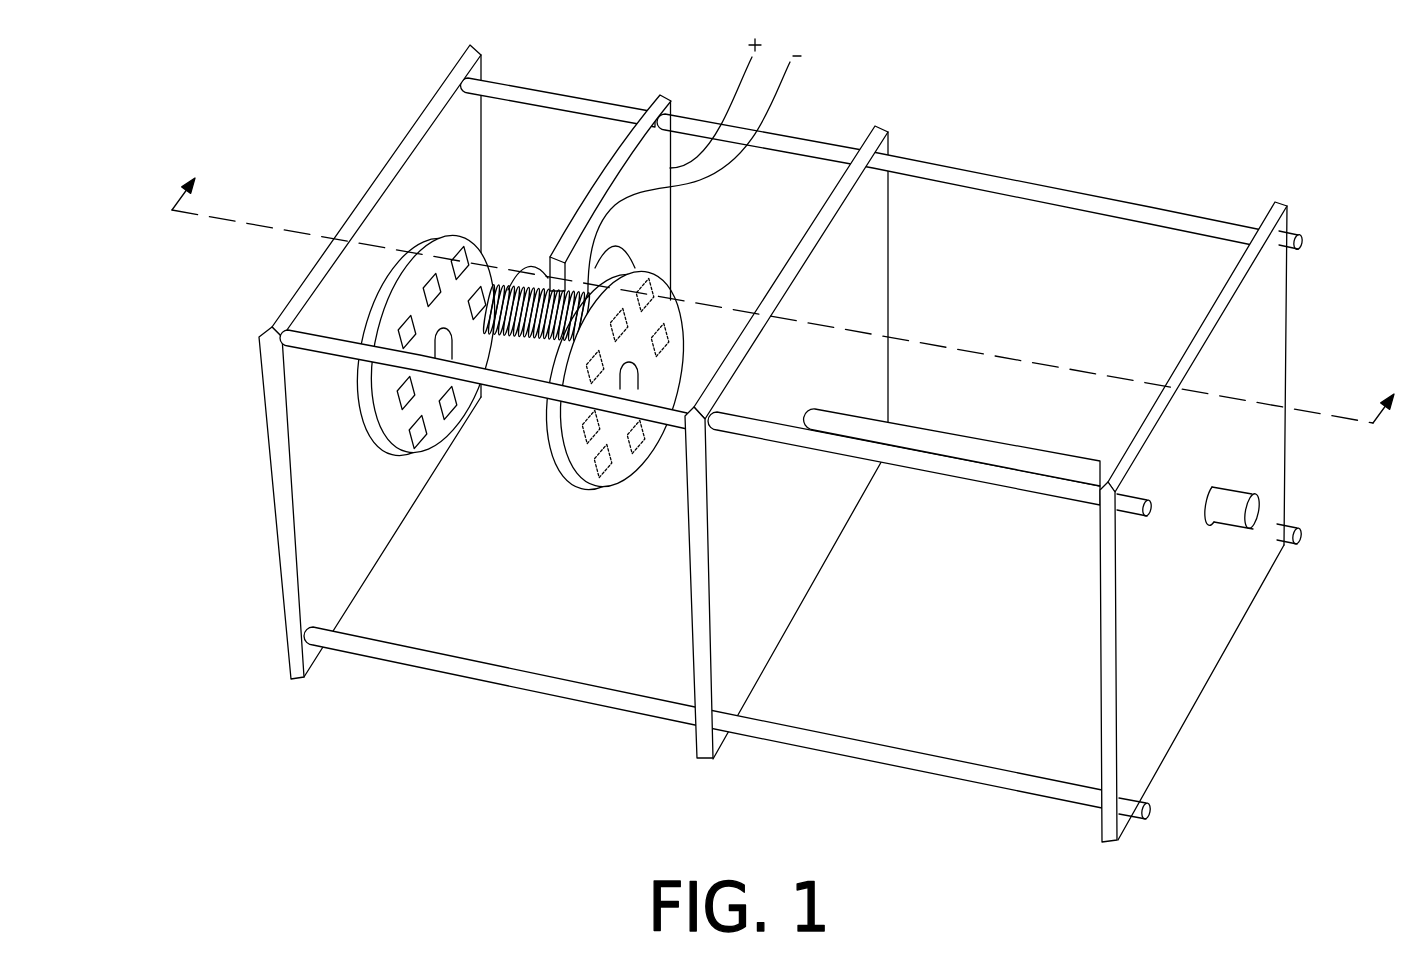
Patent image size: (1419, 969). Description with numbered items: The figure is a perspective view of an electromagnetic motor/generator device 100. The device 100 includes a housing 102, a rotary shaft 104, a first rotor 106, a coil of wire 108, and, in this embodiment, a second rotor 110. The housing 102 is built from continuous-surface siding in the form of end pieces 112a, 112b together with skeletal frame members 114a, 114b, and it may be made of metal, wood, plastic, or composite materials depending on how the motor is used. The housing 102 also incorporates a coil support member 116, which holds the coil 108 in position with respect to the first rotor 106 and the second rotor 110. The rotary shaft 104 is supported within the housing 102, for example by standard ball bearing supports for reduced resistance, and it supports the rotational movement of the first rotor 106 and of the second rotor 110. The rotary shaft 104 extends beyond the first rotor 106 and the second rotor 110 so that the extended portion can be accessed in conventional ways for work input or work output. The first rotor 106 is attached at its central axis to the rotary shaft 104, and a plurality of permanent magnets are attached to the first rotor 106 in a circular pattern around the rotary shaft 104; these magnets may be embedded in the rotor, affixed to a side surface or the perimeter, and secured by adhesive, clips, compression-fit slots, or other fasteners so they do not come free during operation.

The electromagnetic motor/generator device 100 is at (749, 428).
The housing 102 is at (696, 427).
The rotary shaft 104 is at (1248, 528).
The first rotor 106 is at (332, 309).
The coil of wire 108 is at (532, 335).
The second rotor 110 is at (627, 470).
The end piece 112a is at (273, 553).
The end piece 112b is at (887, 317).
The skeletal frame member 114a is at (1142, 206).
The skeletal frame member 114b is at (896, 770).
The coil support member 116 is at (658, 96).